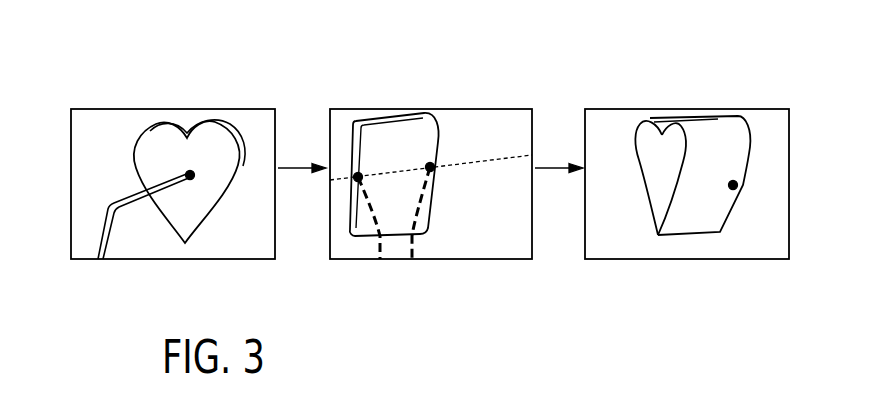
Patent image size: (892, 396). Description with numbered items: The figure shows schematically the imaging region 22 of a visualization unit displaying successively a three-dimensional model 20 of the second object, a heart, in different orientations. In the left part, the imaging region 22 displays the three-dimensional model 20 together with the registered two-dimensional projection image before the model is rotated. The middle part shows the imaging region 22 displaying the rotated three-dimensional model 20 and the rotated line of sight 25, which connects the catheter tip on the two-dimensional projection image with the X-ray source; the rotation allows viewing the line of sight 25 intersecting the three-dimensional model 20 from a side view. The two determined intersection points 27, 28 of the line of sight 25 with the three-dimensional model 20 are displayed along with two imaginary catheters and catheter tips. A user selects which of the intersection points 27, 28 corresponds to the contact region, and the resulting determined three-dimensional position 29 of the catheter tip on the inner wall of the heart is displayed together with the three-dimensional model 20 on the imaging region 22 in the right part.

The three-dimensional model 20 is at (158, 136).
The imaging region 22 is at (103, 109).
The line of sight 25 is at (488, 163).
The intersection point 27 is at (356, 179).
The intersection point 28 is at (431, 162).
The three-dimensional position 29 is at (735, 190).